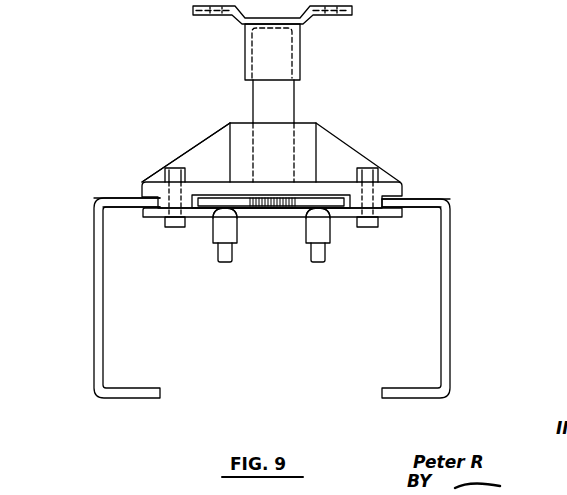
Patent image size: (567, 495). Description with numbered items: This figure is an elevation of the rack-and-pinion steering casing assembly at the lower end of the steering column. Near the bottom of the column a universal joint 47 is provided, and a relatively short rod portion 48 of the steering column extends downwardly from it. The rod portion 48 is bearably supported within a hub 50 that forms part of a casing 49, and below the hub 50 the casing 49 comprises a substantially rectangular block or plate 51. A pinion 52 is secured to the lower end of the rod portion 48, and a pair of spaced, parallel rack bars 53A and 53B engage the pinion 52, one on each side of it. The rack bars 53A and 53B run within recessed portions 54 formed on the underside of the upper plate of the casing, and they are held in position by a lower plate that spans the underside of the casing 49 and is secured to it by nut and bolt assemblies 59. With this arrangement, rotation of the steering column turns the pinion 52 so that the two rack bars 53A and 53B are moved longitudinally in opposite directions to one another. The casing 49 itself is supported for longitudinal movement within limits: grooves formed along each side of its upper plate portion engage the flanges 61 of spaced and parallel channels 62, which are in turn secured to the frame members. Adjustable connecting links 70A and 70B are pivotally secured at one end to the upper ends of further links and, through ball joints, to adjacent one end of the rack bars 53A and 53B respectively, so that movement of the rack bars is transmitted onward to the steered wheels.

The universal joint 47 is at (353, 9).
The rod portion of the steering column 48 is at (295, 98).
The casing 49 is at (346, 143).
The hub 50 is at (210, 136).
The block or plate 51 is at (150, 185).
The pinion 52 is at (273, 208).
The rack bar 53A is at (215, 204).
The rack bar 53B is at (328, 204).
The recessed portions 54 is at (160, 205).
The nut and bolt assemblies 59 is at (401, 216).
The flanges 61 is at (110, 199).
The channels 62 is at (94, 333).
The adjustable connecting link 70A is at (224, 263).
The adjustable connecting link 70B is at (318, 263).